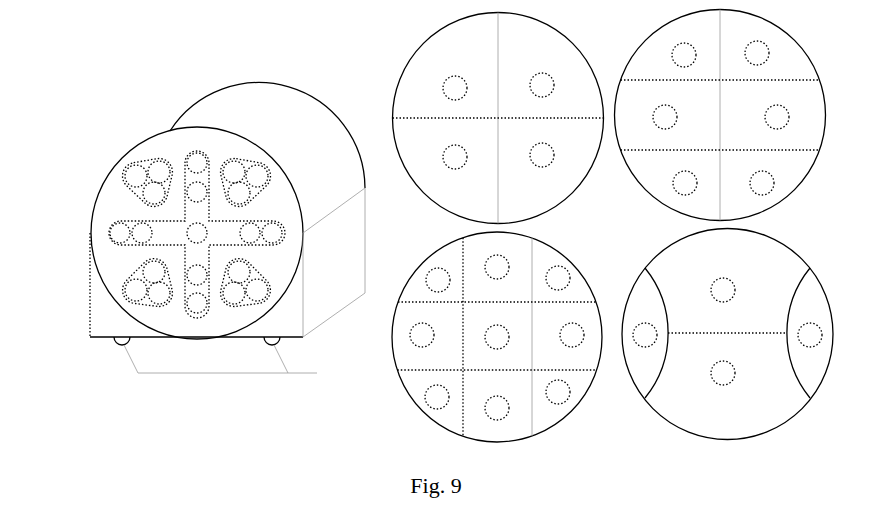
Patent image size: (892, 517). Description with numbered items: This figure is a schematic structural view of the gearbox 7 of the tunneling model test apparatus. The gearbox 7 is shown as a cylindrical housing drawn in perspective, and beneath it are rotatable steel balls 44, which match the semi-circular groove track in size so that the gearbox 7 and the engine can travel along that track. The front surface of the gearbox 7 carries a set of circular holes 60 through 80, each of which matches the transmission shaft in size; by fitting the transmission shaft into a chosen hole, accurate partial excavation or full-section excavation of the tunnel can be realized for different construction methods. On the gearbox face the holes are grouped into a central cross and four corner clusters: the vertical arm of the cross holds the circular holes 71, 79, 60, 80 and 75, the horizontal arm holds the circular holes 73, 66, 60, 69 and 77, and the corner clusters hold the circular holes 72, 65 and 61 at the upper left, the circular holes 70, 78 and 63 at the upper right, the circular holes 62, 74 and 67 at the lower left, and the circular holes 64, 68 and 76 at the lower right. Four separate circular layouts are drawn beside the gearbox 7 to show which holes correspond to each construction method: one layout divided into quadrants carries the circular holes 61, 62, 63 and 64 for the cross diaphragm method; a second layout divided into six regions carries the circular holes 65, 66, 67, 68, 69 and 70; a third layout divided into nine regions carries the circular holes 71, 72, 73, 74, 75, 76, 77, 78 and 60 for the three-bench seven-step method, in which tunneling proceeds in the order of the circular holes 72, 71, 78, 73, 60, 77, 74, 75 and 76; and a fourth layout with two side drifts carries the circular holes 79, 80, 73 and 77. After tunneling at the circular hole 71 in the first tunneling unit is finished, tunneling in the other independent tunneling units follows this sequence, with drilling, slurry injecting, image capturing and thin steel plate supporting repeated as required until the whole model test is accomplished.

The gearbox 7 is at (90, 233).
The steel ball 44 is at (230, 361).
The circular hole 60 is at (348, 286).
The circular hole 61 is at (305, 140).
The circular hole 62 is at (305, 214).
The circular hole 63 is at (391, 138).
The circular hole 64 is at (391, 213).
The circular hole 65 is at (422, 113).
The circular hole 66 is at (404, 174).
The circular hole 67 is at (422, 237).
The circular hole 68 is at (498, 237).
The circular hole 69 is at (514, 174).
The circular hole 70 is at (496, 112).
The circular hole 71 is at (348, 216).
The circular hole 72 is at (287, 228).
The circular hole 73 is at (383, 285).
The circular hole 74 is at (287, 344).
The circular hole 75 is at (348, 356).
The circular hole 76 is at (408, 341).
The circular hole 77 is at (542, 285).
The circular hole 78 is at (408, 227).
The circular hole 79 is at (461, 242).
The circular hole 80 is at (461, 325).